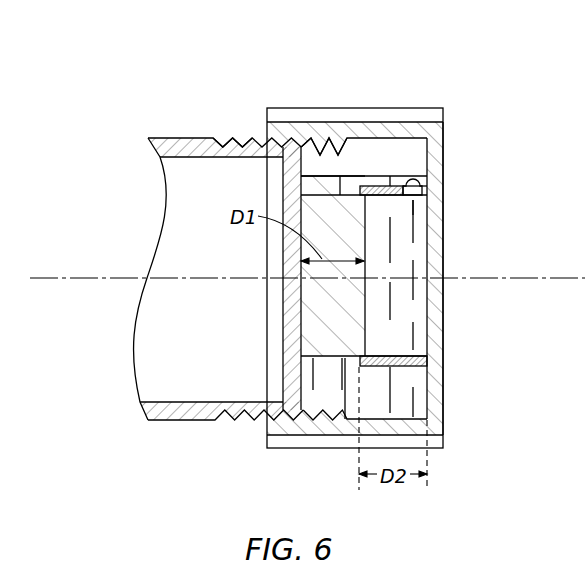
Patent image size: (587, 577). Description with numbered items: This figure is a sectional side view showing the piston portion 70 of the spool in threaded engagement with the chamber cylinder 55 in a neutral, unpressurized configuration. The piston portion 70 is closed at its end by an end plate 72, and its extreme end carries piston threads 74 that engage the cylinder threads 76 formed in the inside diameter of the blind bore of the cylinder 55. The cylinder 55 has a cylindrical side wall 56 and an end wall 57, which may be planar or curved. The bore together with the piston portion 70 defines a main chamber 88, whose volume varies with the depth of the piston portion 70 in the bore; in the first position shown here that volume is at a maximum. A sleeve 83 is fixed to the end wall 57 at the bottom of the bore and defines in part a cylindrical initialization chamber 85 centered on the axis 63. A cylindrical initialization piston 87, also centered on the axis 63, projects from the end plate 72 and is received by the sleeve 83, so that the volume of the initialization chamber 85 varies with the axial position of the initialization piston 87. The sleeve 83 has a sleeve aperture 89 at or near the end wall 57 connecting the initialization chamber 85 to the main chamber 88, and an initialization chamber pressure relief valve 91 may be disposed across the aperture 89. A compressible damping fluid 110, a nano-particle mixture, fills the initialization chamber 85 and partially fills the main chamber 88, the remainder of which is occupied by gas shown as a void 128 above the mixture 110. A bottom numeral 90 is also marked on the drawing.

The chamber cylinder 55 is at (443, 381).
The cylindrical side wall 56 is at (350, 420).
The end wall 57 is at (423, 188).
The axis 63 is at (72, 278).
The piston portion 70 is at (170, 138).
The end plate 72 is at (300, 170).
The piston threads 74 is at (223, 138).
The cylinder threads 76 is at (315, 144).
The sleeve 83 is at (390, 176).
The initialization chamber 85 is at (405, 353).
The initialization piston 87 is at (365, 318).
The main chamber 88 is at (400, 397).
The sleeve aperture 89 is at (415, 213).
The nut 90 is at (375, 177).
The initialization chamber pressure relief valve 91 is at (420, 180).
The damping fluid 110 is at (404, 184).
The void 128 is at (357, 155).